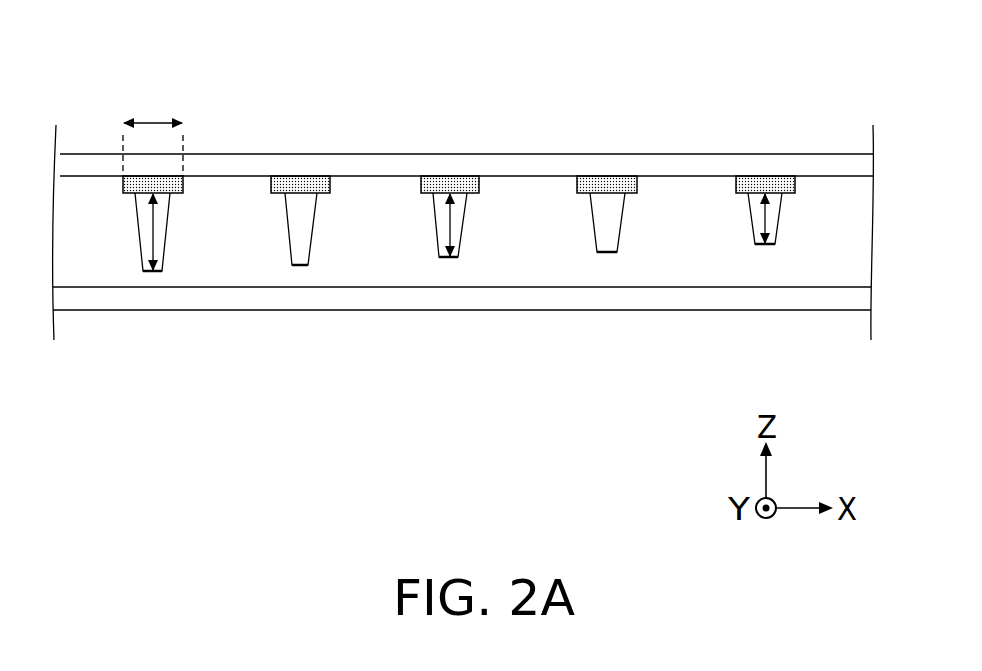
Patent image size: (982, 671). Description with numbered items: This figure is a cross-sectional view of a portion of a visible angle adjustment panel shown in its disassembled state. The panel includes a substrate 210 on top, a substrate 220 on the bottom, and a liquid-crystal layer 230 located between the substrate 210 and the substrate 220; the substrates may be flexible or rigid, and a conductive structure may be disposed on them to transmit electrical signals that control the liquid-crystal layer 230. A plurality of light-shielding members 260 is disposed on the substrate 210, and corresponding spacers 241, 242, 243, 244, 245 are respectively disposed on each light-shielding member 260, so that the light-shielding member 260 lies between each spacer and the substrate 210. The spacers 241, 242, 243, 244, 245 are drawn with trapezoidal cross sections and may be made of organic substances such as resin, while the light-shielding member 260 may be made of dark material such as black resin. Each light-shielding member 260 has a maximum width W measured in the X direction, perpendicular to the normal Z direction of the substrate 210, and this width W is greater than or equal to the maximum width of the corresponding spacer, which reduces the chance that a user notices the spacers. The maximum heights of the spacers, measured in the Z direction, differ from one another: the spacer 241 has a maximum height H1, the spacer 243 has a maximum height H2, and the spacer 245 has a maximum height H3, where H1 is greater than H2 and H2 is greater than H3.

The substrate 210 is at (542, 163).
The substrate 220 is at (253, 298).
The liquid-crystal layer 230 is at (383, 208).
The light-shielding member 260 is at (760, 180).
The spacer 241 is at (158, 237).
The spacer 242 is at (303, 235).
The spacer 243 is at (456, 232).
The spacer 244 is at (610, 228).
The spacer 245 is at (764, 225).
The maximum height H1 is at (150, 233).
The maximum height H2 is at (450, 227).
The maximum height H3 is at (769, 223).
The maximum width W is at (153, 133).